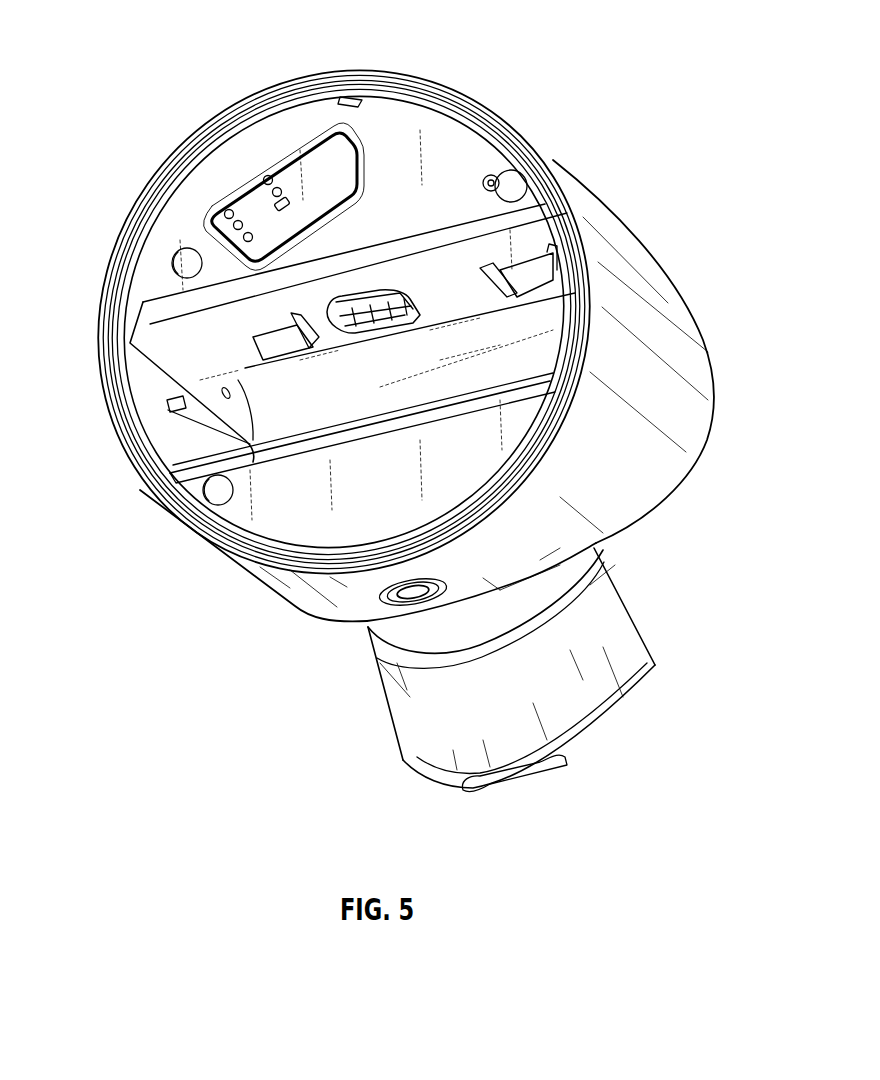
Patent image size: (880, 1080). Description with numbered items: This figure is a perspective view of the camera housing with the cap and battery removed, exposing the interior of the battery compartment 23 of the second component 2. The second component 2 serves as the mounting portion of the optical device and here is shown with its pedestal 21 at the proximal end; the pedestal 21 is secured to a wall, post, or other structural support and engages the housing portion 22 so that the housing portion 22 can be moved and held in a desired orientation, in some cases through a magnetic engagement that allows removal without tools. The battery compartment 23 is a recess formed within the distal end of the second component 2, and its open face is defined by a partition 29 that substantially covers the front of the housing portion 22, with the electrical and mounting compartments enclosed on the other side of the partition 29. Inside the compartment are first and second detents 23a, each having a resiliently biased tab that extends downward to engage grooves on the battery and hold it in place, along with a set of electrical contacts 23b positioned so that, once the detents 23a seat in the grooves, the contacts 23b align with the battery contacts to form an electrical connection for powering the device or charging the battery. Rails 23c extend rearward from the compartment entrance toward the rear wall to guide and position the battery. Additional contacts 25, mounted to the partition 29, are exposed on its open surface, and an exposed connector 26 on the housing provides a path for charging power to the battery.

The second component 2 is at (380, 396).
The pedestal 21 is at (542, 670).
The housing portion 22 is at (450, 390).
The battery compartment 23 is at (304, 325).
The detents 23a is at (321, 293).
The electrical contacts 23b is at (364, 171).
The rails 23c is at (166, 473).
The contacts 25 is at (248, 196).
The exposed connector 26 is at (386, 654).
The partition 29 is at (344, 335).